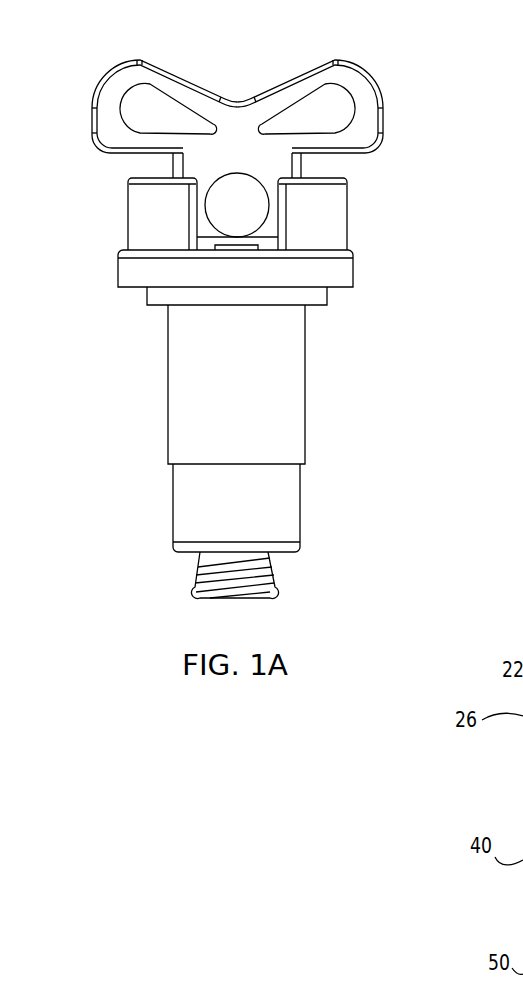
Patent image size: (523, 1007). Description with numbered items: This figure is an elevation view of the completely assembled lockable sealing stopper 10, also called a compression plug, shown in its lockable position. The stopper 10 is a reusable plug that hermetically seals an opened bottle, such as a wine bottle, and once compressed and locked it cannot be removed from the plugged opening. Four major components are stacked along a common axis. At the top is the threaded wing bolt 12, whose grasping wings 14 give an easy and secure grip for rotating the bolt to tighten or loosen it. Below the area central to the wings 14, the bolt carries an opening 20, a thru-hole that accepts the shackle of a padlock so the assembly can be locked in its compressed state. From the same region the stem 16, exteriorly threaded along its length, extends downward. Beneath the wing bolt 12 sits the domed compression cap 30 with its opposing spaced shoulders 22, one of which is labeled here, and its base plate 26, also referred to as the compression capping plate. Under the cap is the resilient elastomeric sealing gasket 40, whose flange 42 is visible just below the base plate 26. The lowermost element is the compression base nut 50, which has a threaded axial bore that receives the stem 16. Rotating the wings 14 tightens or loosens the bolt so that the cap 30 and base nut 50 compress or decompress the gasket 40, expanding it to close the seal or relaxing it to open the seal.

The lockable sealing stopper 10 is at (224, 42).
The threaded wing bolt 12 is at (93, 57).
The wings 14 is at (385, 98).
The stem section 16 is at (197, 587).
The opening 20 is at (222, 210).
The shoulder 22 is at (130, 220).
The base plate 26 is at (353, 268).
The domed compression cap 30 is at (268, 209).
The sealing gasket 40 is at (348, 398).
The flange 42 is at (327, 298).
The compression base nut 50 is at (140, 507).